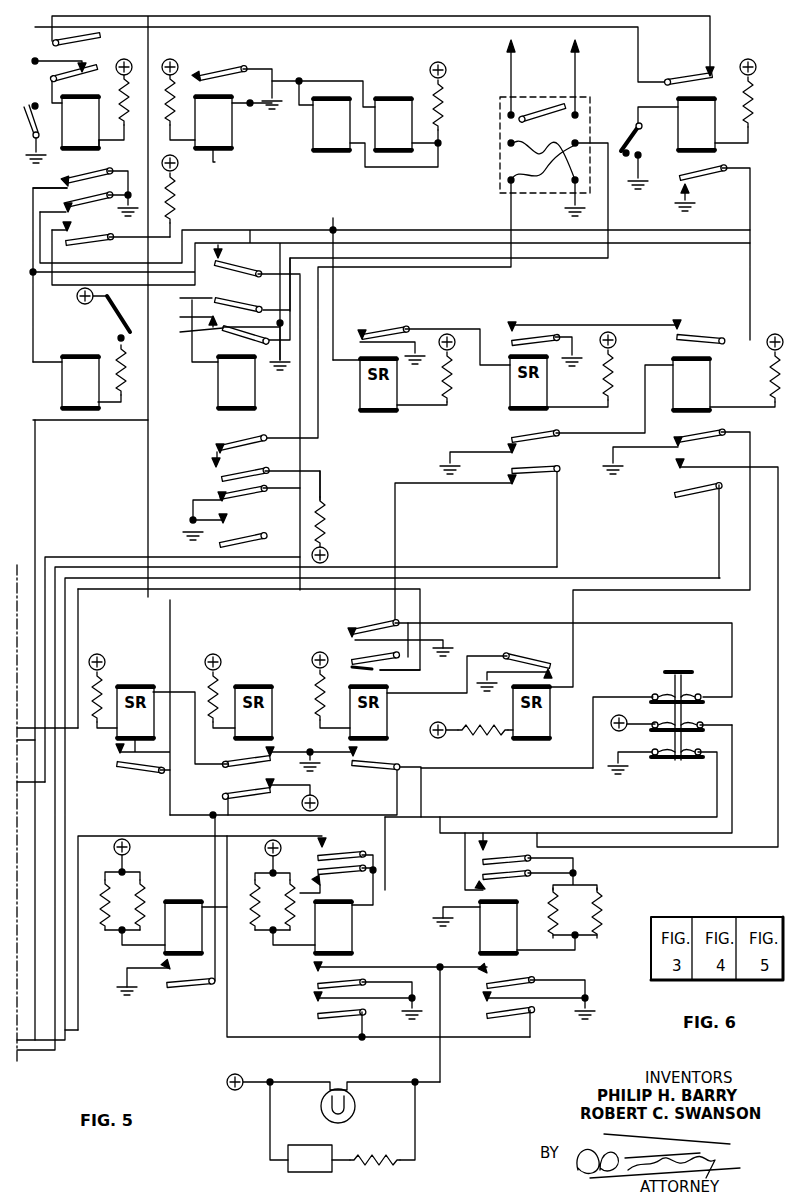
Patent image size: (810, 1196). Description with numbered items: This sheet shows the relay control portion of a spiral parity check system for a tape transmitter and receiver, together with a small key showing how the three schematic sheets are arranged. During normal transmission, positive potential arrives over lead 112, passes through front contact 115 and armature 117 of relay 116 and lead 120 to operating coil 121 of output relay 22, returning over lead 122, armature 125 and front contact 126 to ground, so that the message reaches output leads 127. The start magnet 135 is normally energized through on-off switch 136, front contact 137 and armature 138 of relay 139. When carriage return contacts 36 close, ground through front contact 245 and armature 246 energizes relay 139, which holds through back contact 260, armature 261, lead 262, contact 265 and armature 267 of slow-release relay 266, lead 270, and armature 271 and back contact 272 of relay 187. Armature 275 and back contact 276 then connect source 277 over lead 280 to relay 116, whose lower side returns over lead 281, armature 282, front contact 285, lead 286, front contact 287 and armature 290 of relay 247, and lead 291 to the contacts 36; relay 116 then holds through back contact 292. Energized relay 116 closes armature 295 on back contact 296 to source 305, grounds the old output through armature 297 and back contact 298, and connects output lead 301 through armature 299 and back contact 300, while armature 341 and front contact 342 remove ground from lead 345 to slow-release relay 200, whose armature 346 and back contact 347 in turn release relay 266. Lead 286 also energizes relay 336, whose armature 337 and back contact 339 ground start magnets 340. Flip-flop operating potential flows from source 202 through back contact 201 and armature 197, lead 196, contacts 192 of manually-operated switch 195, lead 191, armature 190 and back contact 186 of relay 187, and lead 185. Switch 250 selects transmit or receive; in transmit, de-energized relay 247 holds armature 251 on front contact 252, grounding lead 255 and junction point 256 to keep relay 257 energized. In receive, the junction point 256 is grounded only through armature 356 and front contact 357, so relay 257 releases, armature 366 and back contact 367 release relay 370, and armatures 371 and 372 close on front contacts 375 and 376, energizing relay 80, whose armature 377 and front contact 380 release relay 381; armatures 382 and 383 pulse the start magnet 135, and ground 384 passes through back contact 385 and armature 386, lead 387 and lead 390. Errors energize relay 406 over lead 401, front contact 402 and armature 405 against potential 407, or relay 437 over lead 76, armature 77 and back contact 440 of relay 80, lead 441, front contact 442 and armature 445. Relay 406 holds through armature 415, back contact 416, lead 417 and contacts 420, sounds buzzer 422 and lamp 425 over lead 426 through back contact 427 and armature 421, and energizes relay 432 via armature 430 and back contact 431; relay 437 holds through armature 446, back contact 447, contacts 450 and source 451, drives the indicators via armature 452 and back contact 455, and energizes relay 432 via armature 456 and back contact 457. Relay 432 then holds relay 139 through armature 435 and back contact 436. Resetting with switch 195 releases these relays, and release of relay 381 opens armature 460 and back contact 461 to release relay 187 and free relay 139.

The output relay 22 is at (496, 176).
The carriage return contacts 36 is at (38, 114).
The lead 76 is at (78, 953).
The armature 77 is at (682, 497).
The relay 80 is at (710, 391).
The lead 112 is at (45, 782).
The front contact 115 is at (216, 451).
The relay 116 is at (218, 384).
The armature 117 is at (224, 440).
The lead 120 is at (312, 446).
The operating coil 121 is at (518, 194).
The lead 122 is at (560, 262).
The armature 125 is at (235, 337).
The front contact 126 is at (210, 333).
The output leads 127 is at (575, 70).
The start magnet 135 is at (62, 384).
The on-off switch 136 is at (112, 318).
The front contact 137 is at (62, 184).
The armature 138 is at (80, 152).
The relay 139 is at (98, 148).
The lead 185 is at (78, 605).
The back contact 186 is at (372, 673).
The relay 187 is at (387, 711).
The armature 190 is at (348, 657).
The lead 191 is at (472, 623).
The contacts 192 is at (656, 693).
The manually-operated switch 195 is at (670, 668).
The lead 196 is at (553, 770).
The armature 197 is at (250, 799).
The relay 200 is at (262, 684).
The back contact 201 is at (264, 785).
The source of positive potential 202 is at (318, 804).
The front contact 245 is at (78, 72).
The armature 246 is at (78, 82).
The relay 247 is at (678, 101).
The switch 250 is at (635, 131).
The armature 251 is at (700, 180).
The front contact 252 is at (680, 190).
The lead 255 is at (674, 236).
The junction point 256 is at (334, 223).
The relay 257 is at (372, 413).
The back contact 260 is at (100, 63).
The armature 261 is at (92, 42).
The lead 262 is at (148, 441).
The contact 265 is at (118, 751).
The relay 266 is at (146, 684).
The armature 267 is at (117, 771).
The lead 270 is at (408, 772).
The armature 271 is at (362, 769).
The back contact 272 is at (357, 759).
The armature 275 is at (77, 246).
The back contact 276 is at (76, 237).
The positive potential source 277 is at (180, 170).
The lead 280 is at (190, 362).
The lead 281 is at (262, 378).
The armature 282 is at (220, 278).
The front contact 285 is at (248, 263).
The lead 286 is at (273, 57).
The front contact 287 is at (718, 72).
The armature 290 is at (692, 77).
The lead 291 is at (418, 28).
The back contact 292 is at (216, 286).
The armature 295 is at (212, 479).
The back contact 296 is at (210, 465).
The armature 297 is at (218, 545).
The back contact 298 is at (232, 523).
The armature 299 is at (206, 302).
The back contact 300 is at (183, 316).
The output lead 301 is at (35, 505).
The source of positive potential 305 is at (330, 552).
The relay 336 is at (219, 134).
The armature 337 is at (204, 70).
The back contact 339 is at (192, 64).
The start magnets 340 is at (368, 148).
The armature 341 is at (240, 498).
The front contact 342 is at (200, 499).
The lead 345 is at (300, 590).
The armature 346 is at (260, 762).
The back contact 347 is at (265, 755).
The armature 356 is at (77, 192).
The front contact 357 is at (76, 211).
The armature 366 is at (366, 331).
The back contact 367 is at (356, 336).
The relay 370 is at (510, 388).
The armature 371 is at (508, 427).
The armature 372 is at (538, 463).
The front contact 375 is at (508, 446).
The front contact 376 is at (510, 480).
The armature 377 is at (688, 434).
The front contact 380 is at (686, 447).
The relay 381 is at (513, 714).
The armature 382 is at (540, 323).
The armature 383 is at (694, 331).
The ground 384 is at (450, 647).
The back contact 385 is at (348, 633).
The armature 386 is at (347, 619).
The lead 387 is at (395, 526).
The lead 390 is at (558, 529).
The lead 401 is at (80, 1030).
The front contact 402 is at (326, 845).
The armature 405 is at (338, 859).
The relay 406 is at (352, 929).
The positive potential 407 is at (264, 849).
The armature 415 is at (370, 890).
The back contact 416 is at (320, 884).
The lead 417 is at (516, 832).
The contacts 420 is at (652, 750).
The armature 421 is at (312, 984).
The buzzer 422 is at (312, 1145).
The indicating lamp 425 is at (355, 1108).
The lead 426 is at (442, 1058).
The back contact 427 is at (312, 968).
The armature 430 is at (312, 1014).
The back contact 431 is at (312, 998).
The relay 432 is at (190, 898).
The armature 435 is at (186, 988).
The back contact 436 is at (168, 978).
The relay 437 is at (480, 941).
The back contact 440 is at (678, 468).
The lead 441 is at (778, 606).
The front contact 442 is at (478, 850).
The armature 445 is at (480, 862).
The armature 446 is at (480, 877).
The back contact 447 is at (490, 889).
The contacts 450 is at (703, 722).
The source of positive potential 451 is at (628, 716).
The armature 452 is at (508, 980).
The back contact 455 is at (485, 975).
The armature 456 is at (483, 1019).
The back contact 457 is at (483, 1001).
The armature 460 is at (550, 655).
The back contact 461 is at (556, 668).